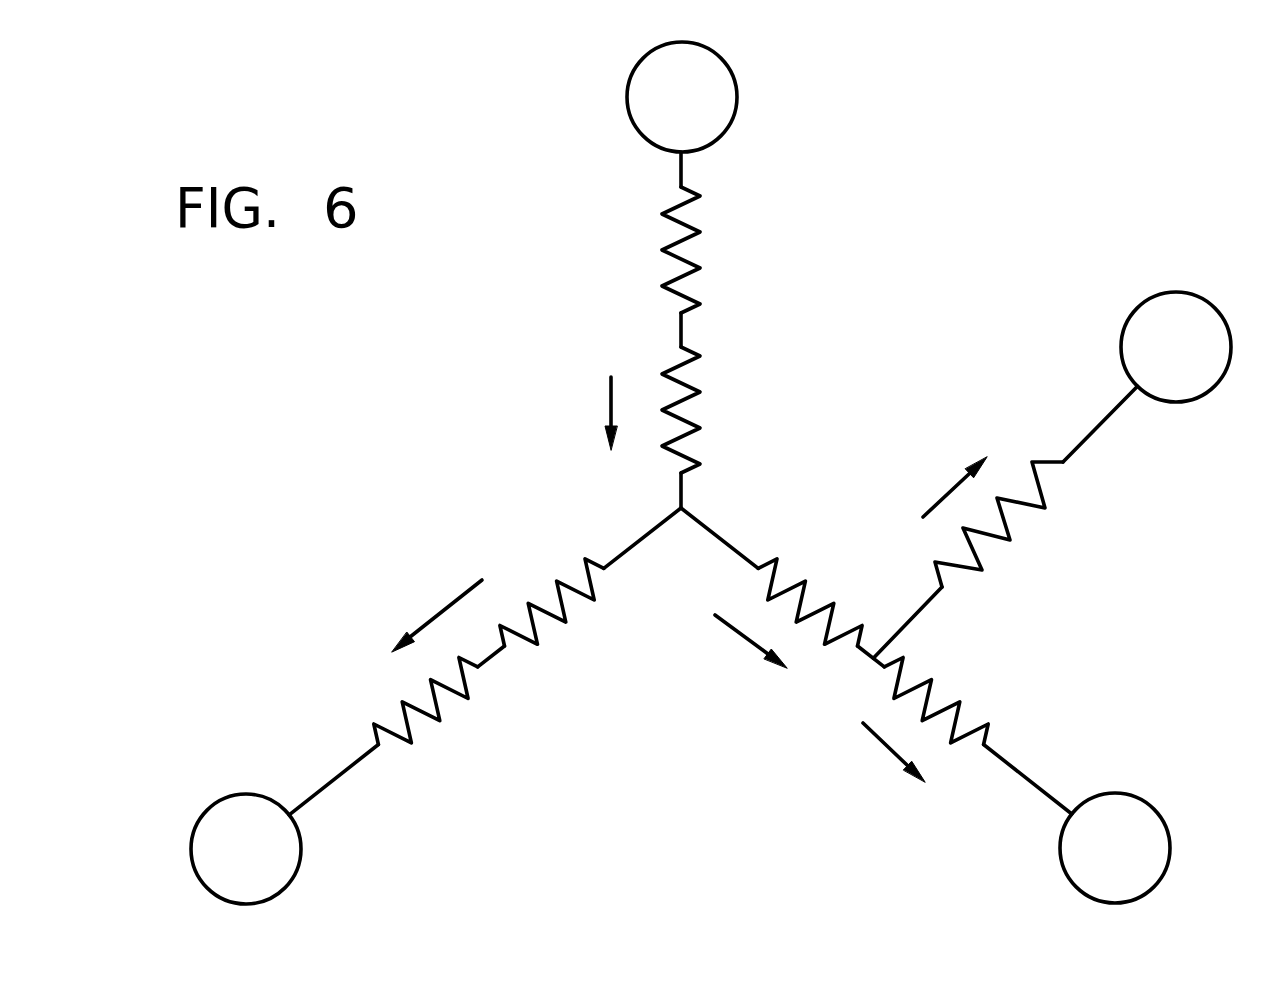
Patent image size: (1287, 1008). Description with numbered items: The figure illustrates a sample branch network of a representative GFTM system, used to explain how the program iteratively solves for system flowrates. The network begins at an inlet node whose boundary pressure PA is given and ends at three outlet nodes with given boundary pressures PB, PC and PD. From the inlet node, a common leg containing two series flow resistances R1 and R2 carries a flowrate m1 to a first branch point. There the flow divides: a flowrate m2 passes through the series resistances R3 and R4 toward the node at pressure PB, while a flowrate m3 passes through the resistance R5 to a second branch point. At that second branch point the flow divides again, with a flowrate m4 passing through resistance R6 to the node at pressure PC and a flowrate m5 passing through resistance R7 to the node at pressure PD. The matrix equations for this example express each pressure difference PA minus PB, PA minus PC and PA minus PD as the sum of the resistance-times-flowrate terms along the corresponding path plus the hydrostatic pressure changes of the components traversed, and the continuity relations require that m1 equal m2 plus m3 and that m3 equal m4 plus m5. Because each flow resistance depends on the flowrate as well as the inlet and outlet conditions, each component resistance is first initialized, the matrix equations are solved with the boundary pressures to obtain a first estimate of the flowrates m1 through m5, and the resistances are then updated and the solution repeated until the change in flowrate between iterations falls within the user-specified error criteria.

The boundary pressure at node A PA is at (682, 97).
The boundary pressure at node B PB is at (246, 849).
The boundary pressure at node C PC is at (1176, 347).
The boundary pressure at node D PD is at (1115, 848).
The flow resistance of component 1 R1 is at (718, 250).
The flow resistance of component 2 R2 is at (718, 410).
The flow resistance of component 3 R3 is at (552, 619).
The flow resistance of component 4 R4 is at (428, 712).
The flow resistance of component 5 R5 is at (810, 592).
The flow resistance of component 6 R6 is at (1010, 524).
The flow resistance of component 7 R7 is at (947, 700).
The system flowrate m1 is at (577, 413).
The system flowrate m2 is at (437, 600).
The system flowrate m3 is at (736, 649).
The system flowrate m4 is at (966, 461).
The system flowrate m5 is at (881, 757).